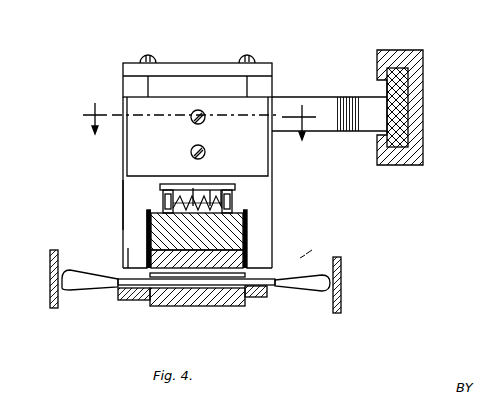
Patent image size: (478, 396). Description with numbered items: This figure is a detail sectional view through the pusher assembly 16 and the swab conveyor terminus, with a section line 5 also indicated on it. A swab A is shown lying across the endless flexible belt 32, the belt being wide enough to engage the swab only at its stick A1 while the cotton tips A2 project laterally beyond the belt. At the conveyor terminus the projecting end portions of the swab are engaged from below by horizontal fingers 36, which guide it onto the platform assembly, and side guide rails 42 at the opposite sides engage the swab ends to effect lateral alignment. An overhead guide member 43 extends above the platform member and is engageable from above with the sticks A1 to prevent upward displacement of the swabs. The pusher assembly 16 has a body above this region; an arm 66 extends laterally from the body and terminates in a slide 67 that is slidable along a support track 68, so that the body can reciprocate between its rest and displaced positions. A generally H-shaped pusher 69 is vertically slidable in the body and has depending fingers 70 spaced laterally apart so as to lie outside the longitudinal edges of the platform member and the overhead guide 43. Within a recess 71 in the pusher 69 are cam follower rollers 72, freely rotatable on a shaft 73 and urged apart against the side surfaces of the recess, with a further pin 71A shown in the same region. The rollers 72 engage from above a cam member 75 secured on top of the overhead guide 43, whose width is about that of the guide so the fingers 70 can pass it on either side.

The pusher assembly 16 is at (100, 89).
The section line 5 is at (199, 133).
The arm 66 is at (350, 97).
The slide 67 is at (424, 97).
The support track 68 is at (405, 52).
The pusher 69 is at (123, 205).
The depending fingers 70 is at (122, 262).
The recess 71 is at (211, 184).
The pin 71A is at (221, 184).
The cam follower rollers 72 is at (163, 196).
The shaft 73 is at (193, 186).
The cam member 75 is at (145, 224).
The overhead guide member 43 is at (128, 248).
The side guide rails 42 is at (50, 280).
The horizontal fingers 36 is at (133, 300).
The endless flexible belt 32 is at (222, 306).
The swab A is at (312, 258).
The stick A1 is at (268, 278).
The cotton tip A2 is at (90, 292).